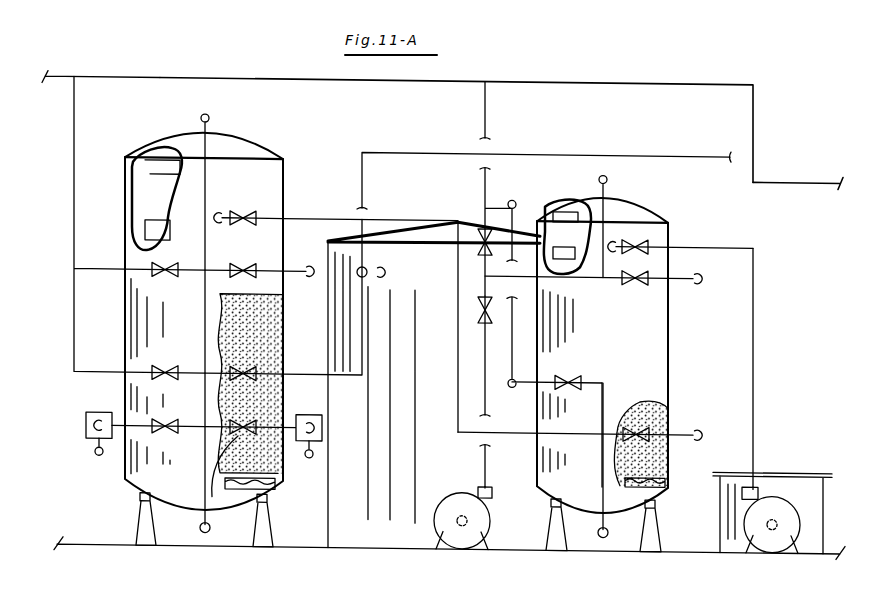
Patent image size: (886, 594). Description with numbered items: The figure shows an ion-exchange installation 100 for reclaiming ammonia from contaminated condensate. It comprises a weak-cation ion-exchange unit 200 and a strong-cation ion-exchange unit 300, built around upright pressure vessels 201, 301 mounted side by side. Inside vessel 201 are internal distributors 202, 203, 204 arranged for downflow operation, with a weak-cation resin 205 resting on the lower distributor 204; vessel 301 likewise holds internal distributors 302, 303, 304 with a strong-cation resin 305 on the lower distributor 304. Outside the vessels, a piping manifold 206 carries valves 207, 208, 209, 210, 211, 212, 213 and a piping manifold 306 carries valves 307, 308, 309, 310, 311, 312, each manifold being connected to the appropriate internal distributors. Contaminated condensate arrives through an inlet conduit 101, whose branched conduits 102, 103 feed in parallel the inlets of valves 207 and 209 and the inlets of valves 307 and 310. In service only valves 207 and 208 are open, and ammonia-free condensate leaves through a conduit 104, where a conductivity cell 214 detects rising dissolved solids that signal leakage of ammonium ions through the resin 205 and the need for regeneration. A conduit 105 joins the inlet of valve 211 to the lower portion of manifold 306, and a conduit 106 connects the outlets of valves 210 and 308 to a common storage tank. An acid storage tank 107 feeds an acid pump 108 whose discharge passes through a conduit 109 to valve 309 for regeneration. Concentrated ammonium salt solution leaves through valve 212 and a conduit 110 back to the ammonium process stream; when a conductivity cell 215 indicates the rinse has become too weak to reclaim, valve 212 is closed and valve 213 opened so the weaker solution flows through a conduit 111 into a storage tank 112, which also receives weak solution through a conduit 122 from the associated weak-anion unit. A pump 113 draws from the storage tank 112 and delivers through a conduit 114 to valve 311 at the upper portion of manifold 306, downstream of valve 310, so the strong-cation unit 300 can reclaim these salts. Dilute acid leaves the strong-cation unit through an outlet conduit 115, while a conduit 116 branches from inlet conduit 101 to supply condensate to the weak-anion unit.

The ion-exchange installation 100 is at (360, 127).
The inlet conduit 101 is at (72, 50).
The branched conduit 102 is at (172, 73).
The branched conduit 103 is at (74, 156).
The conduit 104 is at (95, 455).
The conduit 105 is at (386, 213).
The conduit 106 is at (304, 269).
The acid storage tank 107 is at (800, 463).
The acid pump 108 is at (785, 512).
The conduit 109 is at (754, 316).
The conduit 110 is at (306, 455).
The conduit 111 is at (316, 366).
The storage tank 112 is at (446, 276).
The pump 113 is at (475, 521).
The conduit 114 is at (483, 458).
The dilute acid outlet conduit 115 is at (712, 400).
The conduit 116 is at (797, 178).
The conduit 122 is at (366, 180).
The weak-cation ion-exchange unit 200 is at (150, 133).
The pressure vessel 201 is at (284, 200).
The internal distributor 202 is at (147, 181).
The internal distributor 203 is at (150, 222).
The lower distributor 204 is at (265, 486).
The weak-cation resin 205 is at (258, 405).
The piping manifold 206 is at (214, 463).
The valve 207 is at (164, 282).
The valve 208 is at (167, 421).
The valve 209 is at (158, 369).
The valve 210 is at (256, 264).
The valve 211 is at (242, 211).
The valve 212 is at (223, 473).
The valve 213 is at (238, 368).
The conductivity cell 214 is at (87, 430).
The conductivity cell 215 is at (316, 401).
The strong-cation ion-exchange unit 300 is at (628, 184).
The pressure vessel 301 is at (670, 354).
The internal distributor 302 is at (571, 198).
The internal distributor 303 is at (567, 244).
The lower distributor 304 is at (663, 477).
The strong-cation resin 305 is at (658, 457).
The piping manifold 306 is at (612, 391).
The valve 307 is at (576, 368).
The valve 308 is at (634, 277).
The valve 309 is at (653, 233).
The valve 310 is at (485, 241).
The valve 311 is at (486, 305).
The valve 312 is at (634, 420).